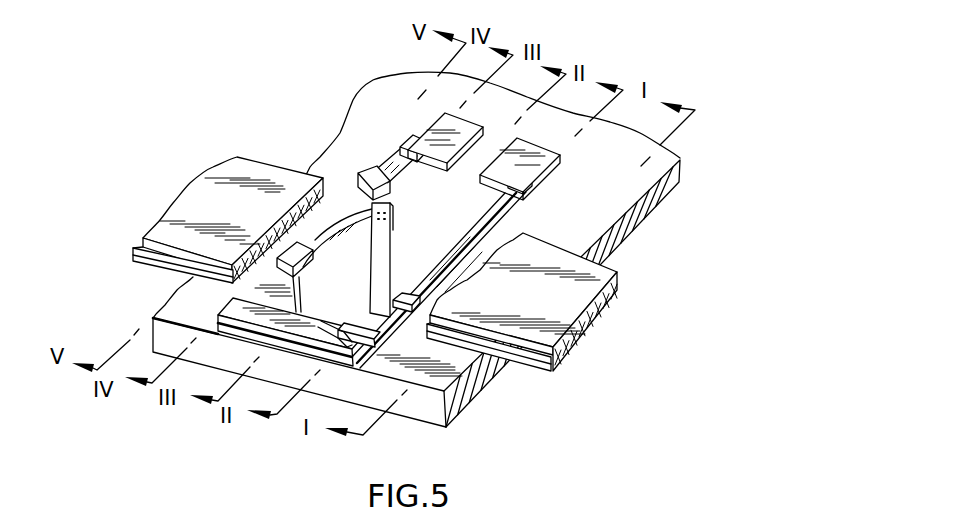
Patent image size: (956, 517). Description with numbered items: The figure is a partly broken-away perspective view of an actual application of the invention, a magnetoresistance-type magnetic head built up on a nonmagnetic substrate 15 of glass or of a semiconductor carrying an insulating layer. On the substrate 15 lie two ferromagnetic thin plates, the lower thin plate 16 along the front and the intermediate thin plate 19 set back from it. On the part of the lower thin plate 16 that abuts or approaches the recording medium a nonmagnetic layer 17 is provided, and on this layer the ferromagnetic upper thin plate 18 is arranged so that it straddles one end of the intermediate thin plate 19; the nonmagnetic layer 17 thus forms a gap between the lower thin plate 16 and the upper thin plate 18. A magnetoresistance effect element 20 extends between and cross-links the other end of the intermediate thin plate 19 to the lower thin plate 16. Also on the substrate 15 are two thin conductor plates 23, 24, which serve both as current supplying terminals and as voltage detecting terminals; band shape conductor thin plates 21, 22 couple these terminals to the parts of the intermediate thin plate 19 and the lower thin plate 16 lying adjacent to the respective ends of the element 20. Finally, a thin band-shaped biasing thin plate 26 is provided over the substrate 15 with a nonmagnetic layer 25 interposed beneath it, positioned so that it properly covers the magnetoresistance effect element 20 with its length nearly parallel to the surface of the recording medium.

The nonmagnetic substrate 15 is at (463, 403).
The lower thin plate 16 is at (365, 307).
The nonmagnetic layer 17 is at (347, 333).
The upper thin plate 18 is at (237, 311).
The intermediate thin plate 19 is at (343, 213).
The magnetoresistance effect element 20 is at (380, 243).
The band shape conductor thin plate 21 is at (393, 168).
The band shape conductor thin plate 22 is at (497, 212).
The thin conductor plate 23 is at (440, 132).
The thin conductor plate 24 is at (541, 167).
The nonmagnetic layer 25 is at (157, 255).
The biasing thin plate 26 is at (195, 193).